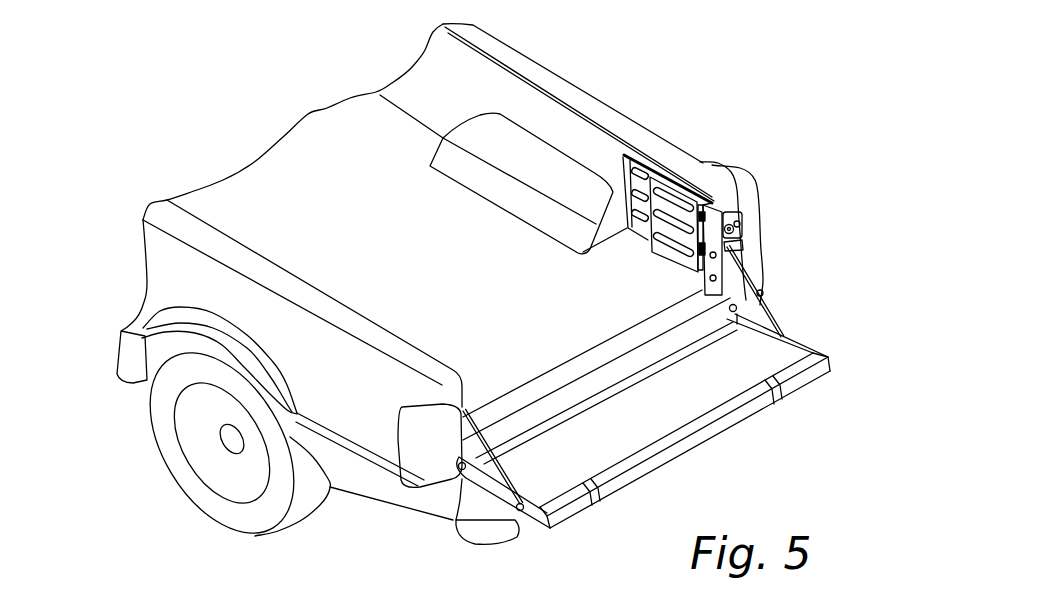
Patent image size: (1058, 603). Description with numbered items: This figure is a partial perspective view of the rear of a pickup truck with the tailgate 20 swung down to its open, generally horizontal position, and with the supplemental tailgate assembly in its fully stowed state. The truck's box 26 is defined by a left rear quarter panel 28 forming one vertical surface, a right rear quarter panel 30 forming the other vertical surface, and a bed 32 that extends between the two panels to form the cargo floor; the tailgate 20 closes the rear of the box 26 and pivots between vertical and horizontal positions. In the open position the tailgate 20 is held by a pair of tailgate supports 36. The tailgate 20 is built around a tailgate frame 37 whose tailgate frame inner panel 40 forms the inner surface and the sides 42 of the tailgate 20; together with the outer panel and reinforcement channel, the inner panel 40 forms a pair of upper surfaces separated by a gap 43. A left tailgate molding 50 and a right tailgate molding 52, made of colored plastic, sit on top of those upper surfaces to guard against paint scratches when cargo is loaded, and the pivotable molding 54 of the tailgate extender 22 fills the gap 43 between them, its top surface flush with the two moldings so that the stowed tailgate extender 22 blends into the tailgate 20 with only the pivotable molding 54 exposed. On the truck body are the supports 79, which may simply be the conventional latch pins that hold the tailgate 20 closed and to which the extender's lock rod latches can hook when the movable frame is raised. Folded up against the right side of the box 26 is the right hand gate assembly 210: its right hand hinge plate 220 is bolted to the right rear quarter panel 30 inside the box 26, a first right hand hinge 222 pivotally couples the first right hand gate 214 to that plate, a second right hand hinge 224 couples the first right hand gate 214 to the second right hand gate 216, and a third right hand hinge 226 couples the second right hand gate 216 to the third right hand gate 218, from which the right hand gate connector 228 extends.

The tailgate 20 is at (666, 444).
The tailgate extender 22 is at (666, 444).
The box 26 is at (365, 213).
The left rear quarter panel 28 is at (140, 280).
The right rear quarter panel 30 is at (442, 23).
The bed 32 is at (310, 113).
The tailgate supports 36 is at (492, 414).
The tailgate frame 37 is at (532, 530).
The tailgate frame inner panel 40 is at (798, 345).
The sides 42 is at (516, 517).
The gap 43 is at (783, 396).
The left tailgate molding 50 is at (553, 528).
The right tailgate molding 52 is at (811, 381).
The pivotable molding 54 is at (700, 476).
The supports 79 is at (735, 220).
The right hand gate assembly 210 is at (716, 185).
The first right hand gate 214 is at (682, 265).
The second right hand gate 216 is at (686, 183).
The third right hand gate 218 is at (660, 160).
The right hand hinge plate 220 is at (744, 252).
The first right hand hinge 222 is at (745, 240).
The second right hand hinge 224 is at (625, 226).
The third right hand hinge 226 is at (711, 194).
The right hand gate connector 228 is at (620, 158).